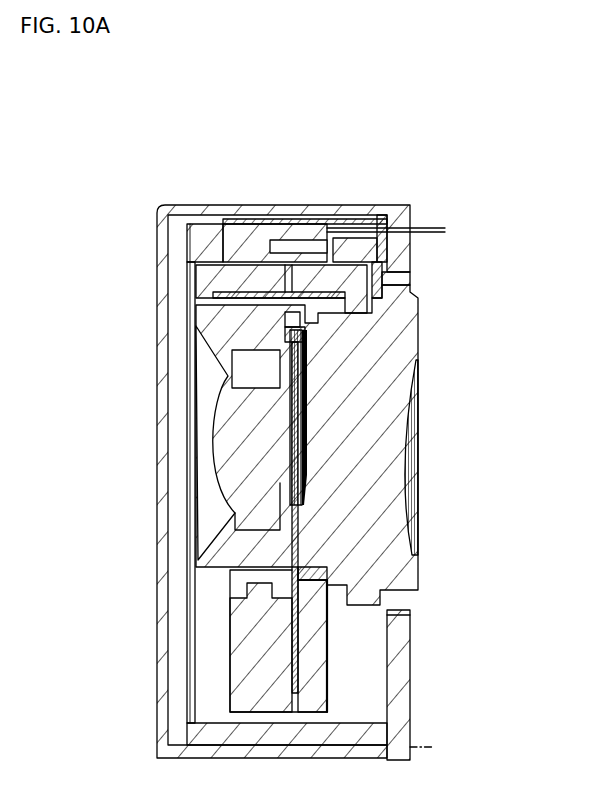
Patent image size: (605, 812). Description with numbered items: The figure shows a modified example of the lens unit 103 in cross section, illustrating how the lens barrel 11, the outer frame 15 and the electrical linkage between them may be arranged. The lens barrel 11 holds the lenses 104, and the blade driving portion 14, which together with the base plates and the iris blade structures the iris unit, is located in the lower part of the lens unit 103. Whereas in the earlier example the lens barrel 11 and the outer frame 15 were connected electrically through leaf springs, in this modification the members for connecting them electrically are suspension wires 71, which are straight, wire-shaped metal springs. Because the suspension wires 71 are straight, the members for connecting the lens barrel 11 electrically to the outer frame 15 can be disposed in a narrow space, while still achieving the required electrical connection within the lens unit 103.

The lens unit 103 is at (396, 173).
The lenses 104 is at (305, 398).
The lens barrel 11 is at (157, 533).
The blade driving portion 14 is at (320, 645).
The outer frame 15 is at (413, 620).
The suspension wires 71 is at (330, 723).